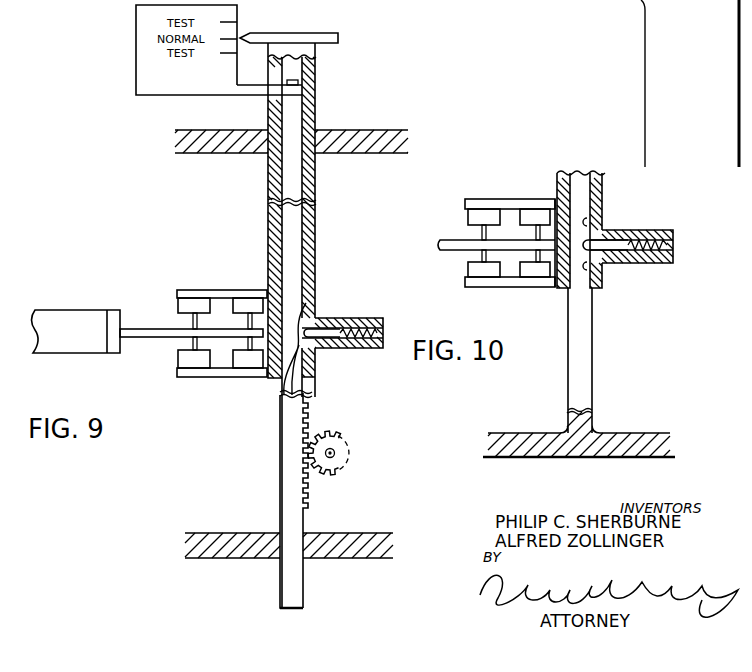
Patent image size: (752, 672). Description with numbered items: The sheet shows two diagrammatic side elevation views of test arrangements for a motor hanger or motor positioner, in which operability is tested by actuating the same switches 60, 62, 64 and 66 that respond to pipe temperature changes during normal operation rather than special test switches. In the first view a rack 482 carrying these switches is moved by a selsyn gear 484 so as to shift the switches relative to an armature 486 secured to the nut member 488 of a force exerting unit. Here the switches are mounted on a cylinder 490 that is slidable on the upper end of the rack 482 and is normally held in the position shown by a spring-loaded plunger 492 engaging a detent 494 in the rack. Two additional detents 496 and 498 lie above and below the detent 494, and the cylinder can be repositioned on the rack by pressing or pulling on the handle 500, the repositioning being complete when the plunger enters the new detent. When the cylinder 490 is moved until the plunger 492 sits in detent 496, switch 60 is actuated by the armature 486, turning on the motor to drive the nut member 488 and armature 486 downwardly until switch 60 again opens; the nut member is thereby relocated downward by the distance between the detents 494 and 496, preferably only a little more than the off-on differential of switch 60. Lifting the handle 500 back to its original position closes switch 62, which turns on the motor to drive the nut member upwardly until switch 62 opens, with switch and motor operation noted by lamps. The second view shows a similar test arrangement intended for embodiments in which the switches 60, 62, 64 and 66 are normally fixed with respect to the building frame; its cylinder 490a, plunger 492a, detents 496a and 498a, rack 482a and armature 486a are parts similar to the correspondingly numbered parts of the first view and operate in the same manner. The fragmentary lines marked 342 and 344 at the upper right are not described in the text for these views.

In FIG. 9, the handle 500 is at (332, 33).
In FIG. 9, the cylinder 490 is at (308, 237).
In FIG. 9, the spring-loaded plunger 492 is at (328, 330).
In FIG. 9, the detent 496 is at (303, 330).
In FIG. 9, the detent 498 is at (298, 352).
In FIG. 9, the detent 494 is at (283, 390).
In FIG. 9, the rack 482 is at (288, 437).
In FIG. 9, the selsyn gear 484 is at (340, 458).
In FIG. 9, the nut member 488 is at (85, 318).
In FIG. 9, the armature 486 is at (150, 338).
In FIG. 9, the switch 60 is at (193, 303).
In FIG. 10, the switch 60 is at (484, 214).
In FIG. 9, the switch 64 is at (248, 302).
In FIG. 10, the switch 64 is at (536, 214).
In FIG. 9, the switch 62 is at (192, 362).
In FIG. 10, the switch 62 is at (486, 275).
In FIG. 9, the switch 66 is at (250, 360).
In FIG. 10, the switch 66 is at (535, 275).
In FIG. 10, the cylinder 490a is at (600, 208).
In FIG. 10, the spring-loaded plunger 492a is at (633, 262).
In FIG. 10, the detent 496a is at (584, 225).
In FIG. 10, the detent 498a is at (598, 280).
In FIG. 10, the rack 482a is at (592, 360).
In FIG. 10, the armature 486a is at (445, 240).
In FIG. 10, the line 344 is at (657, 107).
In FIG. 10, the line 342 is at (649, 83).